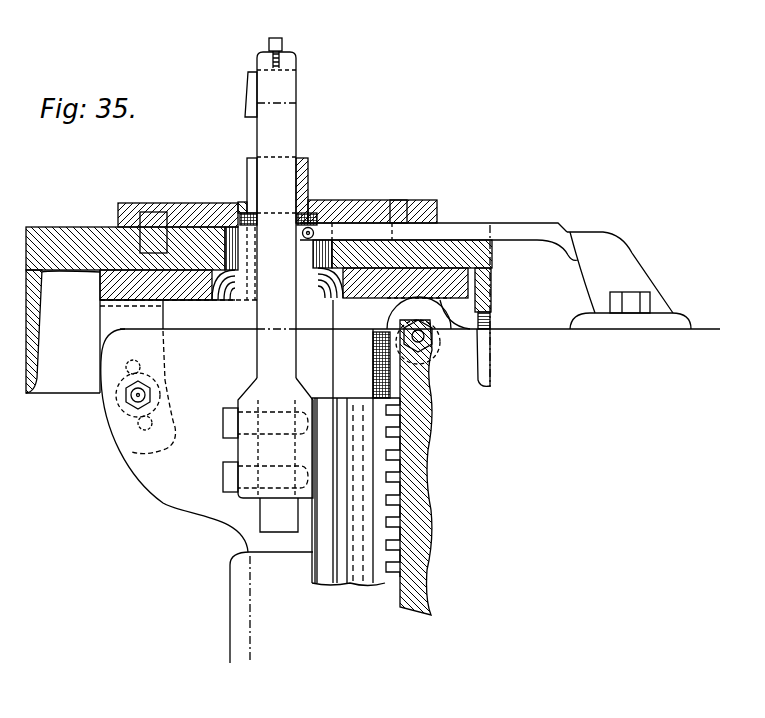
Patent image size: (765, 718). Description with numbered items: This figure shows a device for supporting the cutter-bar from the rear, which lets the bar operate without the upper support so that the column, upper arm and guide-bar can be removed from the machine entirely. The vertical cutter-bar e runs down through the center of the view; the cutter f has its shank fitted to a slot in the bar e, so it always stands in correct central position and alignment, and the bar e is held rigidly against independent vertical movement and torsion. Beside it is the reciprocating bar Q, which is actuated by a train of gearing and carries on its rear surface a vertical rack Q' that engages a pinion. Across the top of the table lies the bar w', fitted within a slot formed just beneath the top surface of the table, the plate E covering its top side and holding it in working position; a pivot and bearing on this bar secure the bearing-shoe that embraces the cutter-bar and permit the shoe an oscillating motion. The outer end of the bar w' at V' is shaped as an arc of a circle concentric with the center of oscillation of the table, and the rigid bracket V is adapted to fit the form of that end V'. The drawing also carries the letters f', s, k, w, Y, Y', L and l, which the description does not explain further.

The set screw f' is at (280, 44).
The cutter f is at (242, 94).
The cutter-bar e is at (268, 292).
The sleeve s is at (247, 196).
The plate E is at (372, 203).
The clamp block k is at (125, 301).
The pin w is at (291, 238).
The bar w' is at (417, 239).
The direction of sliding movement Y is at (493, 188).
The direction of swinging movement Y' is at (543, 280).
The outer end of the bar V' is at (513, 234).
The rigid bracket V is at (629, 280).
The frame L is at (410, 481).
The bearing plate l is at (212, 303).
The bar Q is at (356, 484).
The vertical rack Q' is at (403, 467).